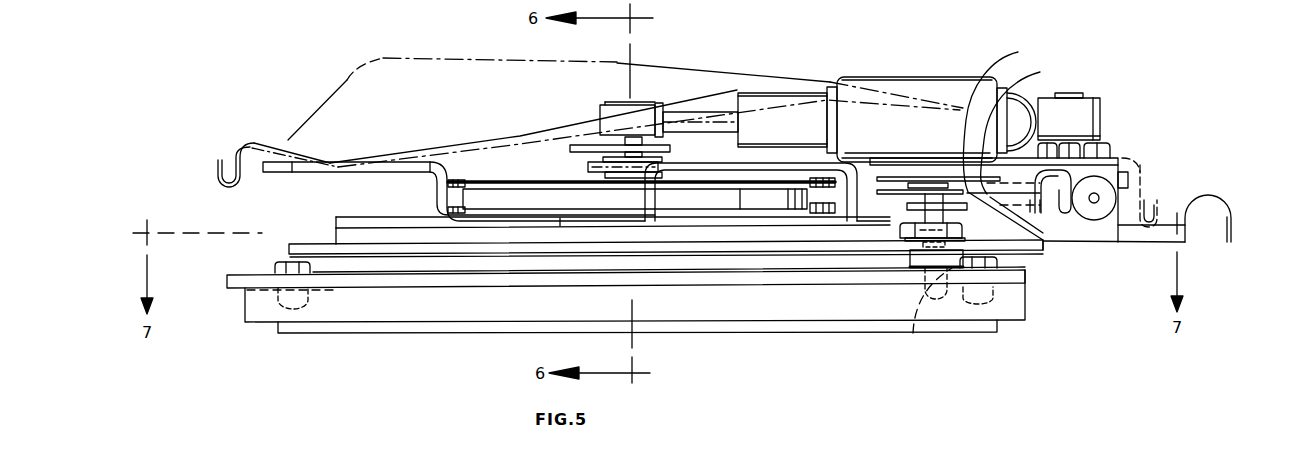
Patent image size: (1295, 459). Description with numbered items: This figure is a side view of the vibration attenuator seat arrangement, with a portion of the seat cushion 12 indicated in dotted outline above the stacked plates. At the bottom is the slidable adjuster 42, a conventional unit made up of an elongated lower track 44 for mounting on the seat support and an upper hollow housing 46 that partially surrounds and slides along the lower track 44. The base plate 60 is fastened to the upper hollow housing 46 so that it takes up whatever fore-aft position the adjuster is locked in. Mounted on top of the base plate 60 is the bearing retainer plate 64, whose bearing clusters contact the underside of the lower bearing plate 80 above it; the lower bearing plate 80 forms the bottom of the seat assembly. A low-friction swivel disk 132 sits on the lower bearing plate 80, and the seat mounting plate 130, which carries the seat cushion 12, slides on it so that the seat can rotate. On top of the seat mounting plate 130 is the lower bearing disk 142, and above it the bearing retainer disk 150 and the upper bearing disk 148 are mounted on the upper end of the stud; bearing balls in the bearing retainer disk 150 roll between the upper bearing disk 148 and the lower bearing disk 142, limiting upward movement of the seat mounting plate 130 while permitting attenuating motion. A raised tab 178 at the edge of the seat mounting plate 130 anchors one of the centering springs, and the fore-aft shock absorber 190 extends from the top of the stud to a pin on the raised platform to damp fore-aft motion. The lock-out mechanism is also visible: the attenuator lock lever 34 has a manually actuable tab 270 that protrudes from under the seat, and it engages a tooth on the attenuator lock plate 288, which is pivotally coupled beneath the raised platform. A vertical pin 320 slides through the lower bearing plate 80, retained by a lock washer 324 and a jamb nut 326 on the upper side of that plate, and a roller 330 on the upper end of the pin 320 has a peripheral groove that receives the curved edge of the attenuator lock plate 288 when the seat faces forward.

The seat cushion 12 is at (252, 142).
The attenuator lock lever 34 is at (1183, 243).
The slidable adjuster 42 is at (832, 336).
The lower track 44 is at (977, 333).
The upper hollow housing 46 is at (1025, 300).
The base plate 60 is at (1025, 277).
The bearing retainer plate 64 is at (338, 260).
The lower bearing plate 80 is at (300, 244).
The seat mounting plate 130 is at (352, 217).
The swivel disk 132 is at (333, 232).
The lower bearing disk 142 is at (812, 200).
The upper bearing disk 148 is at (705, 181).
The bearing retainer disk 150 is at (742, 196).
The raised tab 178 is at (588, 165).
The fore-aft shock absorber 190 is at (906, 90).
The manually actuable tab 270 is at (1212, 208).
The attenuator lock plate 288 is at (1040, 72).
The pin 320 is at (964, 258).
The lock washer 324 is at (900, 233).
The jamb nut 326 is at (960, 228).
The roller 330 is at (1018, 52).